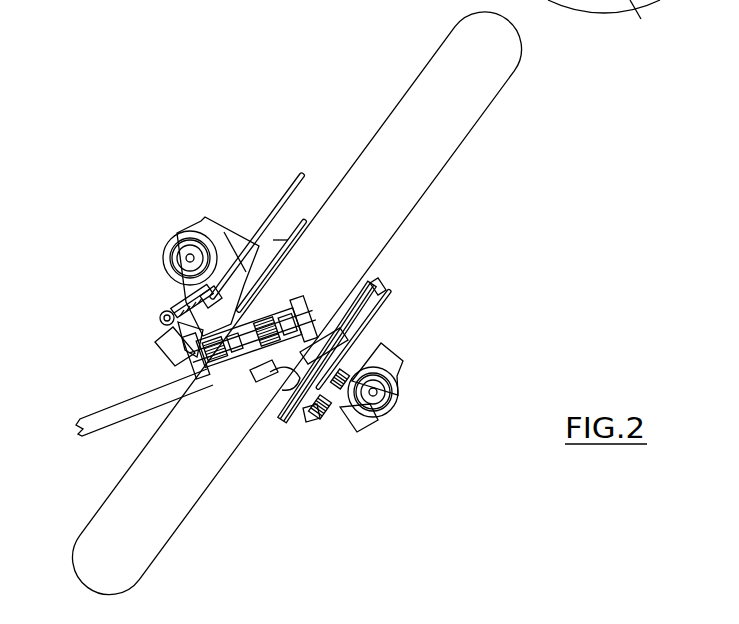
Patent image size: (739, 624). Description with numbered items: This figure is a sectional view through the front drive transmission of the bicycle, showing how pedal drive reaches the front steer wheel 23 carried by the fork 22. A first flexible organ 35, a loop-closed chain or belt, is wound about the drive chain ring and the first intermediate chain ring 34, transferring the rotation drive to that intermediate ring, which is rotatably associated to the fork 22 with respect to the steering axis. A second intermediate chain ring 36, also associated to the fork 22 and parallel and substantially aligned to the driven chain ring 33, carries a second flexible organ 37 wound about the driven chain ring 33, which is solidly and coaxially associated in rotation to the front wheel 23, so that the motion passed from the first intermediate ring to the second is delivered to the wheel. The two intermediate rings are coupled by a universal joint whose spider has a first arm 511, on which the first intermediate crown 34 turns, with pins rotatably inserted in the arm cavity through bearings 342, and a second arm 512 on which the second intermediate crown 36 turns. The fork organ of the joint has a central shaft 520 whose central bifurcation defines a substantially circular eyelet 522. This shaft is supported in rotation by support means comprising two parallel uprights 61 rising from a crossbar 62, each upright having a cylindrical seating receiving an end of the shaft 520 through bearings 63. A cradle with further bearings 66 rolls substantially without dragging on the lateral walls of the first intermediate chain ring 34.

The fork 22 is at (392, 396).
The front steer wheel 23 is at (453, 122).
The driven chain ring 33 is at (683, 0).
The first intermediate chain ring 34 is at (205, 368).
The first flexible organ 35 is at (100, 420).
The second intermediate chain ring 36 is at (293, 420).
The second flexible organ 37 is at (374, 292).
The upright 61 is at (327, 410).
The crossbar 62 is at (283, 372).
The bearing 63 is at (168, 275).
The further bearing 66 is at (273, 356).
The bearing 342 is at (282, 325).
The first arm 511 is at (272, 330).
The second arm 512 is at (259, 383).
The central shaft 520 is at (190, 309).
The eyelet 522 is at (343, 338).